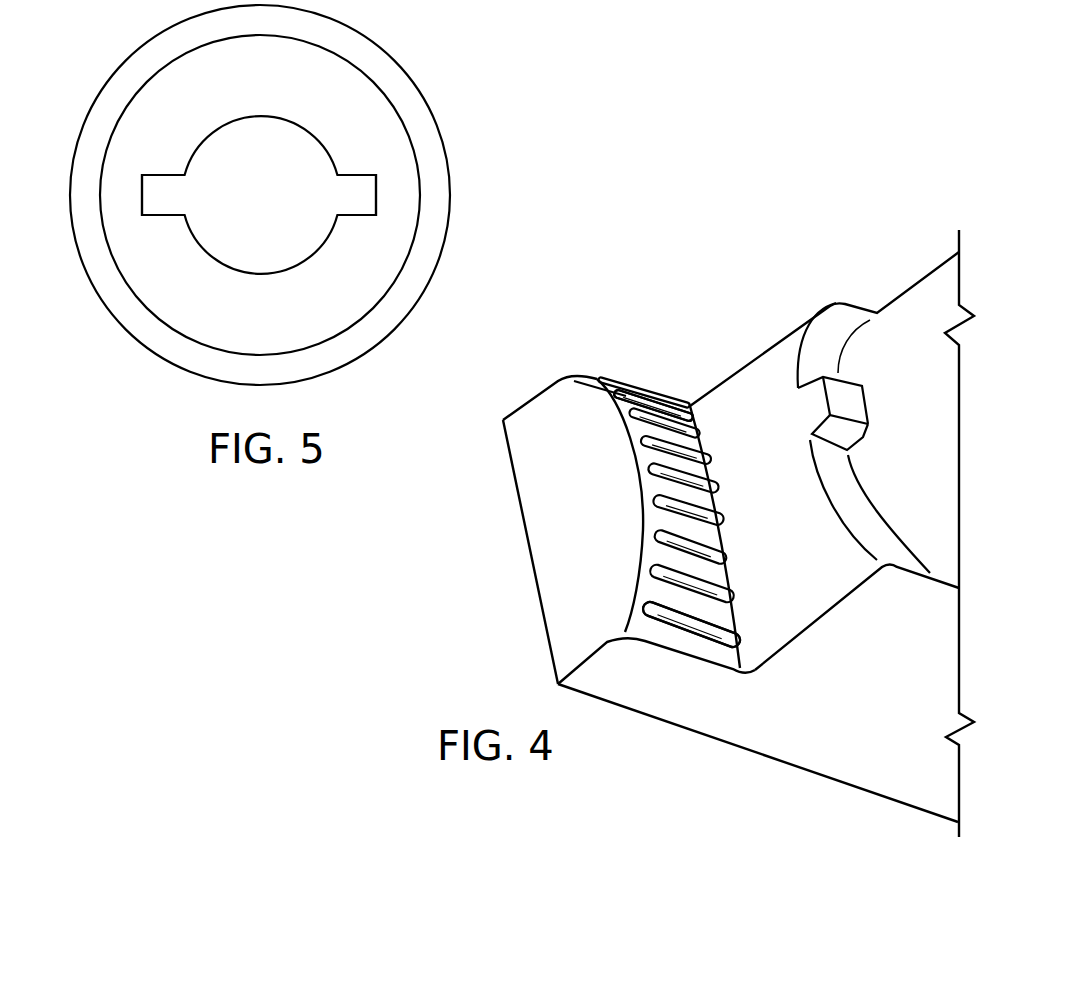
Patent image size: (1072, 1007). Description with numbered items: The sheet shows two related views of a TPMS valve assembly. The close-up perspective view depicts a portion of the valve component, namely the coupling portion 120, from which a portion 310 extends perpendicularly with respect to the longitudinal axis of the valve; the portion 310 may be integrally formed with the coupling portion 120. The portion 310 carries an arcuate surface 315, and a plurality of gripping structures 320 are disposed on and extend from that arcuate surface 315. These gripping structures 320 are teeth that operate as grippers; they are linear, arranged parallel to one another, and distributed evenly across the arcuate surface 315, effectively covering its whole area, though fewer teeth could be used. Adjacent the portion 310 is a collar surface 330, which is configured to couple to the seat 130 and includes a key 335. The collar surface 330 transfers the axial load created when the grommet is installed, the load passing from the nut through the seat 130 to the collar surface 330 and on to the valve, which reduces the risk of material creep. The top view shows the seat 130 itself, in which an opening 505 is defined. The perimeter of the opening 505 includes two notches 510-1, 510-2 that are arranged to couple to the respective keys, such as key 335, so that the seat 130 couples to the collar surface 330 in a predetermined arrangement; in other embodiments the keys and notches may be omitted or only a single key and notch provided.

In FIG. 4, the coupling portion 120 is at (692, 783).
In FIG. 5, the seat 130 is at (431, 110).
In FIG. 4, the portion 310 is at (540, 520).
In FIG. 4, the arcuate surface 315 is at (722, 555).
In FIG. 4, the gripping structures 320 is at (697, 432).
In FIG. 4, the collar surface 330 is at (860, 505).
In FIG. 4, the key 335 is at (857, 405).
In FIG. 5, the opening 505 is at (290, 135).
In FIG. 5, the notch 510-1 is at (362, 205).
In FIG. 5, the notch 510-2 is at (158, 203).